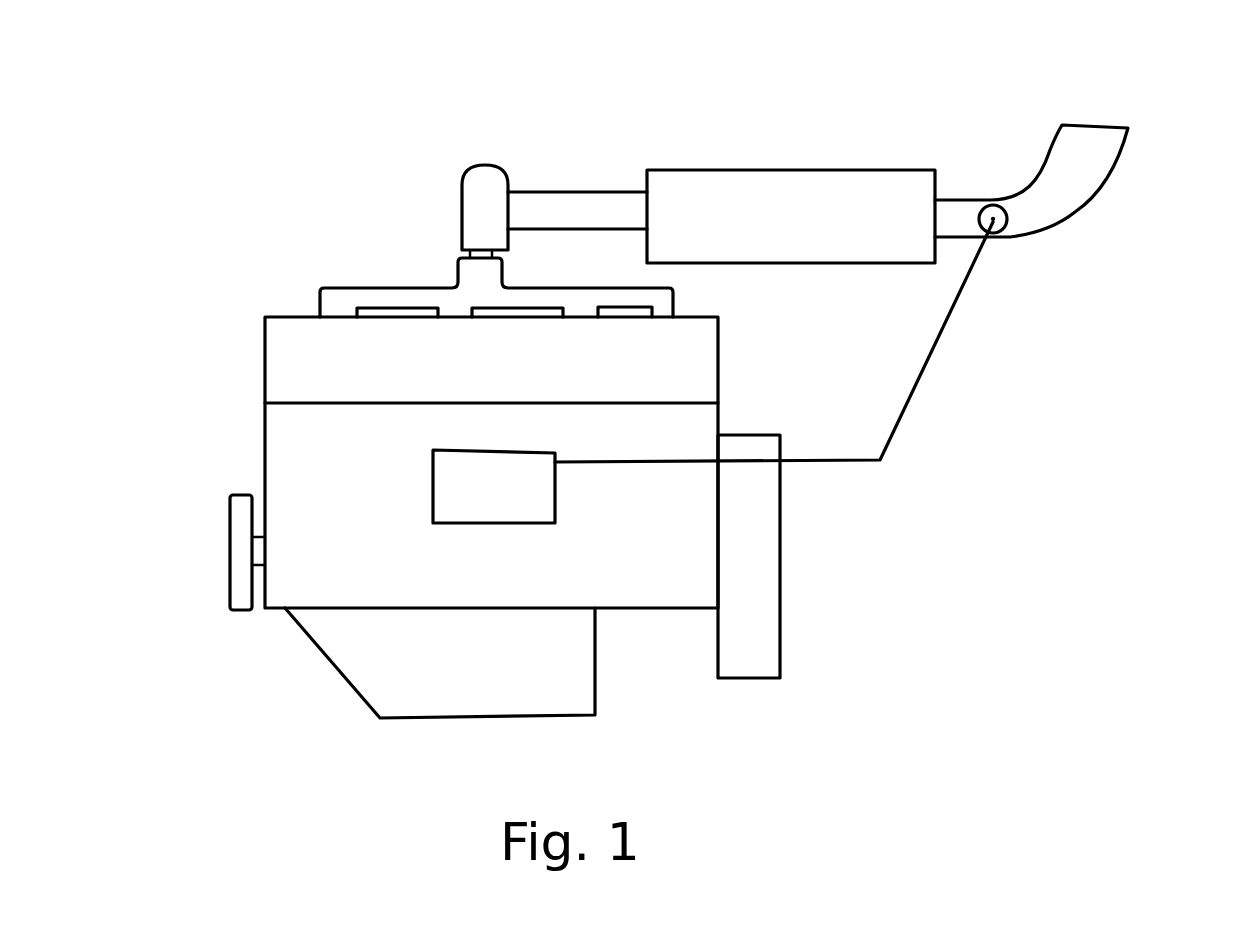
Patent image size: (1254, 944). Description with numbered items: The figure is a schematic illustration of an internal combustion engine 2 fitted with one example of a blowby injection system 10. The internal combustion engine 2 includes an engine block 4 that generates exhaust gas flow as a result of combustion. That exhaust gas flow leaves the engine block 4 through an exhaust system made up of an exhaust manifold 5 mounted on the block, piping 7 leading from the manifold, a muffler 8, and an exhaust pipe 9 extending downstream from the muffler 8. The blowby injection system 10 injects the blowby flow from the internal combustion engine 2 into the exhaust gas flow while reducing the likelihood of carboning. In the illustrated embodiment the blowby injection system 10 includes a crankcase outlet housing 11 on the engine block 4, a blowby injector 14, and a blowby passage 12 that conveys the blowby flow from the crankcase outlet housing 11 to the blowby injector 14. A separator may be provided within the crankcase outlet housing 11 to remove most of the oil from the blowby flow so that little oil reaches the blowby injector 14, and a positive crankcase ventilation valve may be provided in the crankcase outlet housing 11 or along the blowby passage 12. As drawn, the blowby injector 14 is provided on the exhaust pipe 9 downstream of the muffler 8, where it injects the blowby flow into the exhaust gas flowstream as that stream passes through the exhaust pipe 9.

The internal combustion engine 2 is at (703, 70).
The engine block 4 is at (295, 447).
The exhaust manifold 5 is at (383, 298).
The piping 7 is at (580, 192).
The muffler 8 is at (812, 198).
The exhaust pipe 9 is at (1053, 199).
The blowby injection system 10 is at (1075, 360).
The crankcase outlet housing 11 is at (463, 497).
The blowby passage 12 is at (932, 365).
The blowby injector 14 is at (1000, 230).